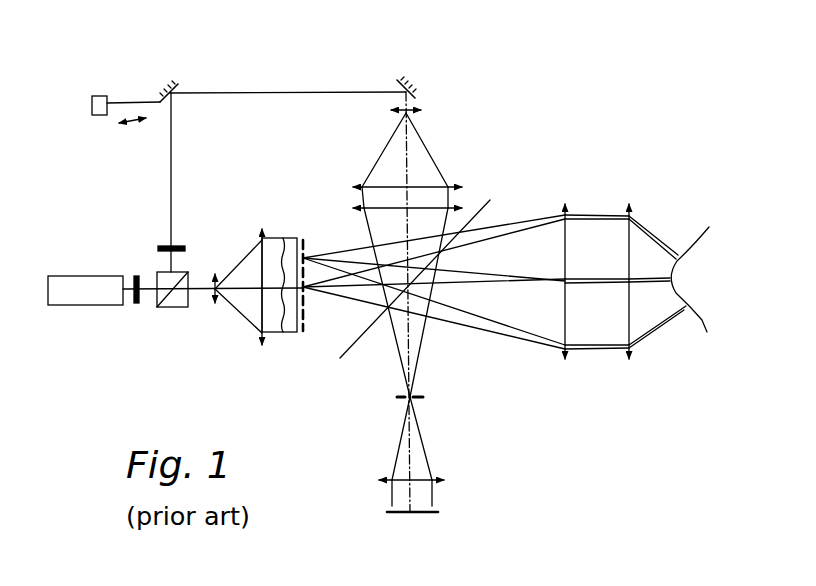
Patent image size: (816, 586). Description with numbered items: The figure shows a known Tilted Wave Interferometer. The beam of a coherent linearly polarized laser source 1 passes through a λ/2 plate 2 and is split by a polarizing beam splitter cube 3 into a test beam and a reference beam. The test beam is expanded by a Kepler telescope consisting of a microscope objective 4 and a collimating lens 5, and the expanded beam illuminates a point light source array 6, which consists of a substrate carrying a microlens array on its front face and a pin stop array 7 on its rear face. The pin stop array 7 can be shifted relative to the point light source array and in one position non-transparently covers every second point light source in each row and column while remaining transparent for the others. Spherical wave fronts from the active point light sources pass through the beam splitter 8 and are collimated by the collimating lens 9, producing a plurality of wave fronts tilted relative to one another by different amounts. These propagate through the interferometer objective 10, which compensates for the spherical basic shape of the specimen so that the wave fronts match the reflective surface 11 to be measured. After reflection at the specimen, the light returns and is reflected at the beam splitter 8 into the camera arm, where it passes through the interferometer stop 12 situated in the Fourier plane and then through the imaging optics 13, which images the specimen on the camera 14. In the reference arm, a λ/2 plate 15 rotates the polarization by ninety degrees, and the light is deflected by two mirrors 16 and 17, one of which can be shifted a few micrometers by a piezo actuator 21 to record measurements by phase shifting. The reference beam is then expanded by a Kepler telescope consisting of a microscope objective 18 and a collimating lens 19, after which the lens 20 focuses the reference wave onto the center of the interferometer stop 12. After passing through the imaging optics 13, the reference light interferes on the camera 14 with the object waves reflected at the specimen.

The laser source 1 is at (95, 272).
The λ/2 plate 2 is at (133, 275).
The polarizing beam splitter cube 3 is at (158, 268).
The microscope objective 4 is at (214, 266).
The collimating lens 5 is at (259, 224).
The point light source array 6 is at (289, 234).
The pin stop array 7 is at (308, 238).
The beam splitter 8 is at (492, 199).
The collimating lens 9 is at (564, 196).
The interferometer objective 10 is at (628, 196).
The reflective surface 11 is at (695, 236).
The interferometer stop 12 is at (429, 396).
The imaging optics 13 is at (453, 479).
The camera 14 is at (452, 512).
The λ/2 plate 15 is at (168, 243).
The mirror 16 is at (164, 90).
The mirror 17 is at (413, 84).
The microscope objective 18 is at (387, 110).
The collimating lens 19 is at (355, 182).
The lens 20 is at (466, 204).
The piezo actuator 21 is at (100, 95).